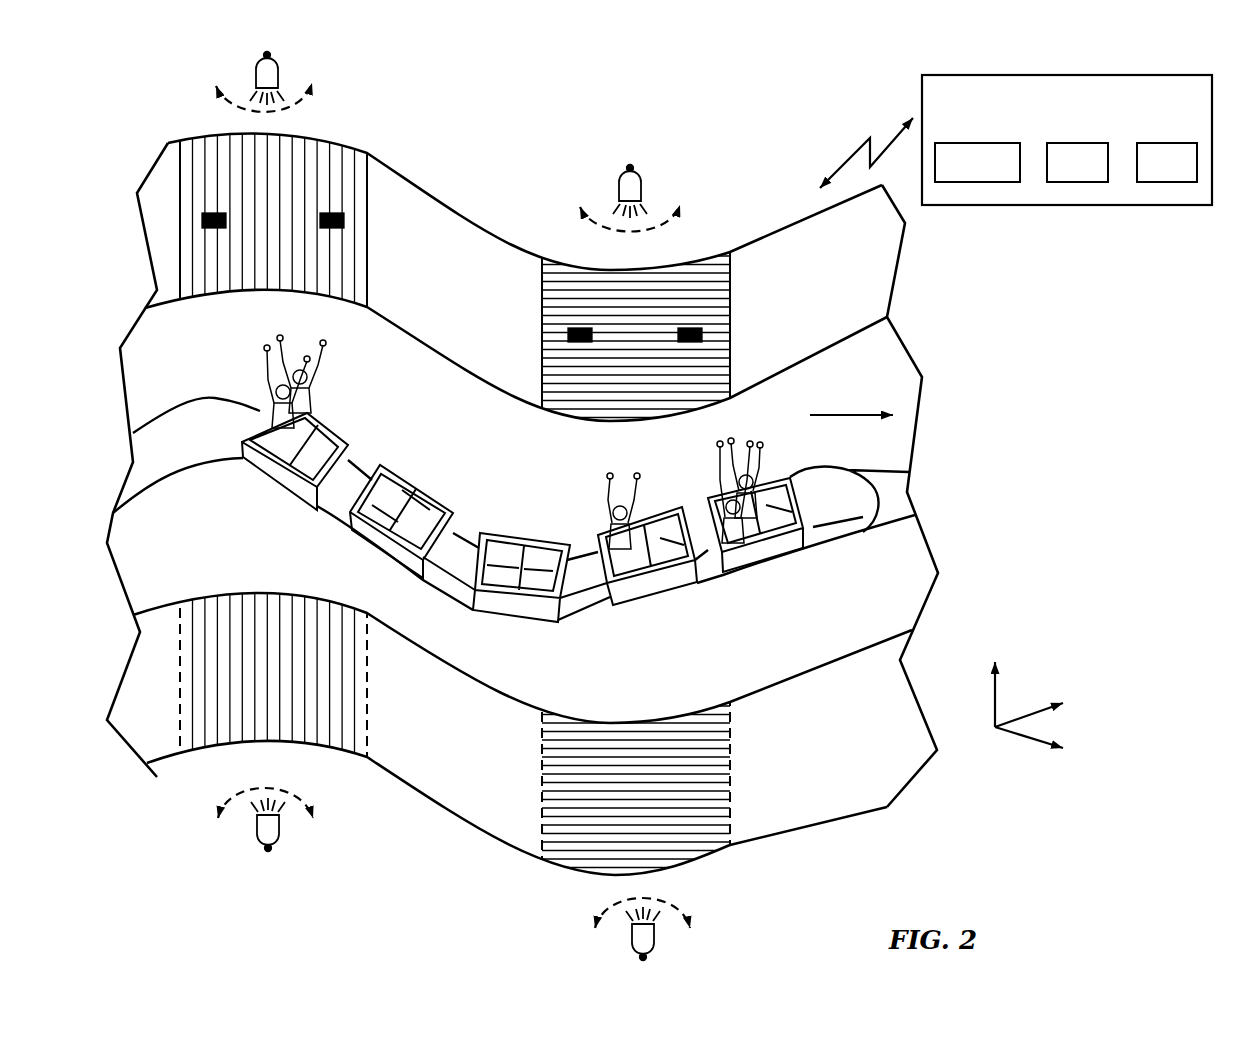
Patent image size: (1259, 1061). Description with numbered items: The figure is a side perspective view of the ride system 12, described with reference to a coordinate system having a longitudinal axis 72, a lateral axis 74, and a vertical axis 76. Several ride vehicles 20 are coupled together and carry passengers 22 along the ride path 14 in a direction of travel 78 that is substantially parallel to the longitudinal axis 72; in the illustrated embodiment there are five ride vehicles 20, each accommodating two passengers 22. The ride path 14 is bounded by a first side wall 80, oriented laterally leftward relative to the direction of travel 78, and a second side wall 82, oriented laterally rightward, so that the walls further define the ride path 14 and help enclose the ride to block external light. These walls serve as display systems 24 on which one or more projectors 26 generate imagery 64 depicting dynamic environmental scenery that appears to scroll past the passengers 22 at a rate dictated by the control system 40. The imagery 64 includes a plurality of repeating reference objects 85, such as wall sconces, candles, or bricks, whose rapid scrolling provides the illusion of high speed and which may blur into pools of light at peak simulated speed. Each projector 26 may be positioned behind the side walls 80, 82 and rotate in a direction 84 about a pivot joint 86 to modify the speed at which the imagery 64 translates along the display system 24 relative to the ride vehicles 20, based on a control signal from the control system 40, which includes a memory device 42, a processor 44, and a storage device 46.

The ride system 12 is at (622, 112).
The ride path 14 is at (158, 490).
The ride vehicle 20 is at (276, 480).
The passengers 22 is at (258, 364).
The display system 24 is at (465, 223).
The projector 26 is at (279, 68).
The control system 40 is at (1212, 138).
The memory device 42 is at (980, 143).
The processor 44 is at (1170, 143).
The storage device 46 is at (1080, 143).
The imagery 64 is at (263, 140).
The longitudinal axis 72 is at (1033, 713).
The lateral axis 74 is at (1025, 738).
The vertical axis 76 is at (997, 692).
The direction of travel 78 is at (835, 416).
The first side wall 80 is at (826, 363).
The second side wall 82 is at (820, 820).
The direction of rotation 84 is at (310, 95).
The reference objects 85 is at (333, 213).
The pivot joint 86 is at (264, 56).